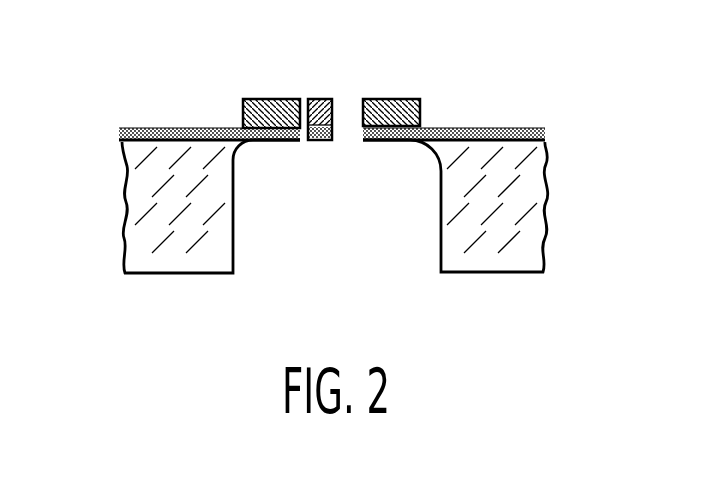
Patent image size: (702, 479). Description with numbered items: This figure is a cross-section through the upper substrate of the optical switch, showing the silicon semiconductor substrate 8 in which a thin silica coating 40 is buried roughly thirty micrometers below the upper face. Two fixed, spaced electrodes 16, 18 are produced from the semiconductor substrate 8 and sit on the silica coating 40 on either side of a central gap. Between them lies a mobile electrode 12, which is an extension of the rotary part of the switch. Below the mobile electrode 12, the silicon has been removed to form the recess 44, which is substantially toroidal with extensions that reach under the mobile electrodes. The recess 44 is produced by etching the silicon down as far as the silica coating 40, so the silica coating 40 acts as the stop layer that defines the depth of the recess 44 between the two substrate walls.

The semiconductor substrate 8 is at (167, 230).
The silica coating 40 is at (165, 128).
The fixed electrode 16 is at (262, 110).
The mobile electrode 12 is at (323, 107).
The fixed electrode 18 is at (417, 110).
The recess 44 is at (370, 243).